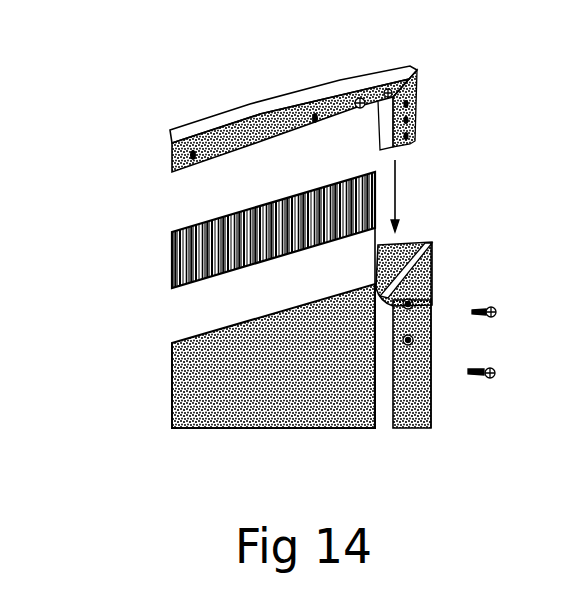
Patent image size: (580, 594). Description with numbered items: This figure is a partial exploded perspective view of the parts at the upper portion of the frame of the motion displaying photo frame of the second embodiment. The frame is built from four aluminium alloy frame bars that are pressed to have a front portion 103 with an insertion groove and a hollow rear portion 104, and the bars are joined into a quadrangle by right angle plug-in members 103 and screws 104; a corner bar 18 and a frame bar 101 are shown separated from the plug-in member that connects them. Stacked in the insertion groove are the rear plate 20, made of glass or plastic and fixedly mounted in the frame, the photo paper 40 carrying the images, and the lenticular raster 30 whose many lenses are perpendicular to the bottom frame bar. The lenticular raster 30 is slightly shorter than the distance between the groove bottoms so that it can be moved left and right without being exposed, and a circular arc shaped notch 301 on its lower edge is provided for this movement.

The frame 18 is at (437, 73).
The upper rail 101 is at (288, 106).
The right angle plug-in member 103 is at (420, 138).
The lenticular raster 30 is at (398, 183).
The photo paper 40 is at (363, 234).
The rear plate 20 is at (330, 410).
The screw 104 is at (412, 242).
The notch 301 is at (579, 253).